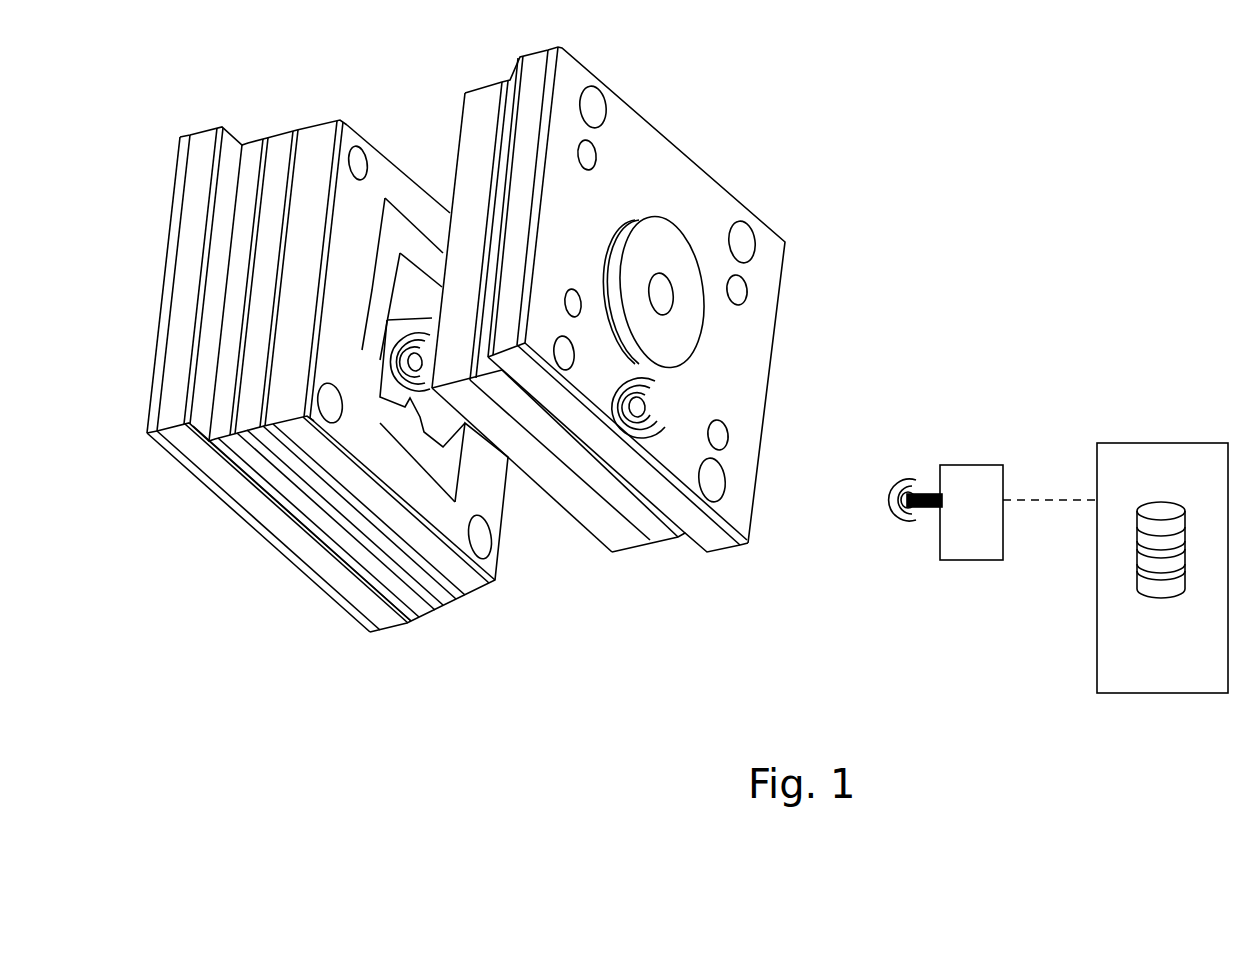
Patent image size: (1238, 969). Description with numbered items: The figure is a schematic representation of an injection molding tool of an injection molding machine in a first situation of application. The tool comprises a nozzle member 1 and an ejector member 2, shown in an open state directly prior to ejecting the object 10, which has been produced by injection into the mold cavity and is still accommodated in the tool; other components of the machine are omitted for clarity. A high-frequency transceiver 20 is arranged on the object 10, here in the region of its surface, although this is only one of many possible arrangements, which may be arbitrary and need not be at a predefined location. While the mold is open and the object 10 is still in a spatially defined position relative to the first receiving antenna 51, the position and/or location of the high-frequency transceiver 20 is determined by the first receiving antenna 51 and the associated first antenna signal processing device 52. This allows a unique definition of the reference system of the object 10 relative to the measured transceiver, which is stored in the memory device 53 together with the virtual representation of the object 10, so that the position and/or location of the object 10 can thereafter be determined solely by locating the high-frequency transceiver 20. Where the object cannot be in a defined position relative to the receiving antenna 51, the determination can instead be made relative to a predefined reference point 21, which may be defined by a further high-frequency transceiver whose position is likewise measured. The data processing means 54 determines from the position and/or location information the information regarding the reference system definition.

The nozzle member 1 is at (722, 131).
The ejector member 2 is at (268, 612).
The object 10 is at (413, 325).
The high-frequency transceiver 20 is at (445, 432).
The reference point 21 is at (648, 395).
The first receiving antenna 51 is at (923, 493).
The first antenna signal processing device 52 is at (975, 540).
The memory device 53 is at (1163, 511).
The data processing means 54 is at (1113, 637).